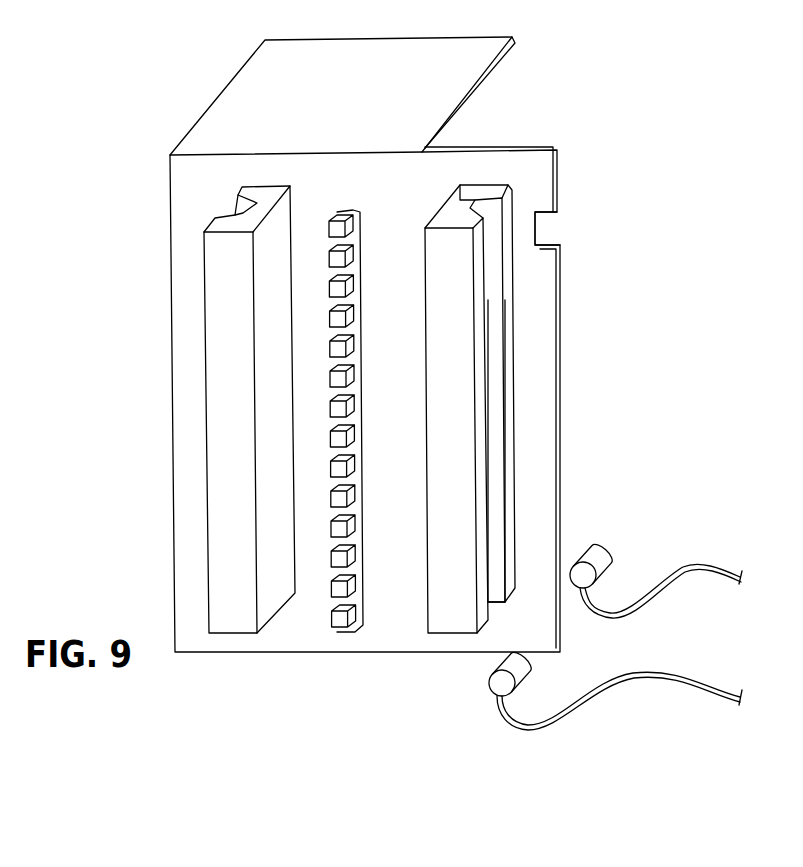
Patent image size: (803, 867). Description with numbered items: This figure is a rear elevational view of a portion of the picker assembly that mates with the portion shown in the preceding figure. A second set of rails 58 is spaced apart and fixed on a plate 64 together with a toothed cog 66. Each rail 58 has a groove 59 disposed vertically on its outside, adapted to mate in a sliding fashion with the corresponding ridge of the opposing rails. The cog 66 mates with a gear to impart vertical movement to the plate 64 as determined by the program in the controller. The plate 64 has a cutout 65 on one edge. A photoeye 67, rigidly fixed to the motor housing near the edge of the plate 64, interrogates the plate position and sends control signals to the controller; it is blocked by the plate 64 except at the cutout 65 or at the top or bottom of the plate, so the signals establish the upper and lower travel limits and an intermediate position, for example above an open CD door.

The rail 58 is at (510, 300).
The groove 59 is at (493, 360).
The plate 64 is at (560, 540).
The cutout 65 is at (552, 232).
The toothed cog 66 is at (355, 573).
The photoeye 67 is at (607, 552).